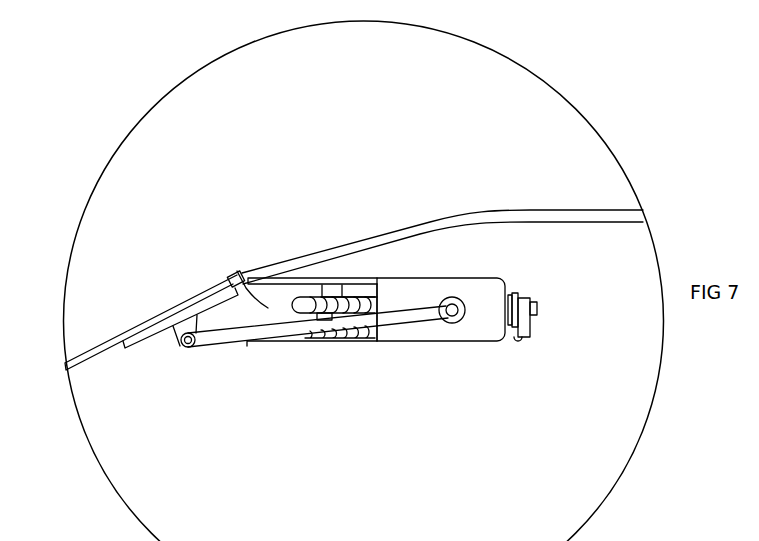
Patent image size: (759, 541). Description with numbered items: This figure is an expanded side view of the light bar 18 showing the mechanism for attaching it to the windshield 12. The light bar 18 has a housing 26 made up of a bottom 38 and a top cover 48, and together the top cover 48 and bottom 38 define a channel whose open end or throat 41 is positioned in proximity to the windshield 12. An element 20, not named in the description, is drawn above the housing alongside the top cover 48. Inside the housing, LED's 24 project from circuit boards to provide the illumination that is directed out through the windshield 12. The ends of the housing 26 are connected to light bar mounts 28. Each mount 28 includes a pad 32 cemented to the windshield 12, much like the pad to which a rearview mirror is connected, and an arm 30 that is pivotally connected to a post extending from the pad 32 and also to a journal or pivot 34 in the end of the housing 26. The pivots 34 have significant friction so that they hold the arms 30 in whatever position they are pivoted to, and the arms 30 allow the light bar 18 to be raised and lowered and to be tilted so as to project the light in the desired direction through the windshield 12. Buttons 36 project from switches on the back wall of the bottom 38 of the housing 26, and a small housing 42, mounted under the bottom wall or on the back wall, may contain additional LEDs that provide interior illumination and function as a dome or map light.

The windshield 12 is at (91, 348).
The light bar 18 is at (460, 341).
The cover shell 20 is at (447, 217).
The LED's 24 is at (357, 299).
The housing 26 is at (503, 277).
The light bar mounts 28 is at (176, 345).
The arms 30 is at (232, 345).
The pads 32 is at (190, 307).
The journals or pivots 34 is at (461, 303).
The buttons 36 is at (537, 307).
The bottom 38 is at (308, 342).
The throat 41 is at (241, 271).
The small housing 42 is at (530, 323).
The top cover 48 is at (315, 282).